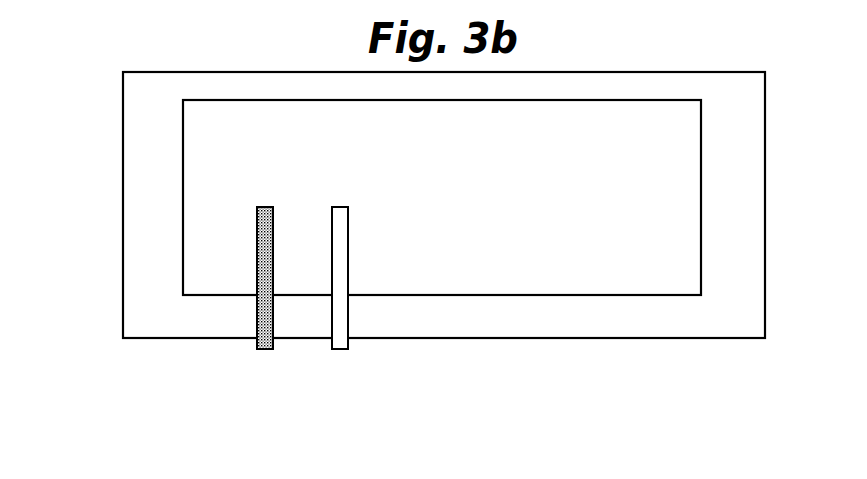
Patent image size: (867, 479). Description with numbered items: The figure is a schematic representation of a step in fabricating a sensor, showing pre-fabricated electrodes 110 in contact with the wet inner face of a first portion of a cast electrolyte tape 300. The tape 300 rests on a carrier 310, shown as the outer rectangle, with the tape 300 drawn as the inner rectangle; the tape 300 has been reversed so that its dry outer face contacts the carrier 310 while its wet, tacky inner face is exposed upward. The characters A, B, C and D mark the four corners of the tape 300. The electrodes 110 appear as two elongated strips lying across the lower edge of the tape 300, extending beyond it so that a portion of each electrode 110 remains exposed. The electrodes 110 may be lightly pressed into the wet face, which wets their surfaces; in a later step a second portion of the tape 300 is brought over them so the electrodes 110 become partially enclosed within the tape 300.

The carrier 310 is at (153, 148).
The tape 300 is at (442, 197).
The electrodes 110 is at (346, 355).